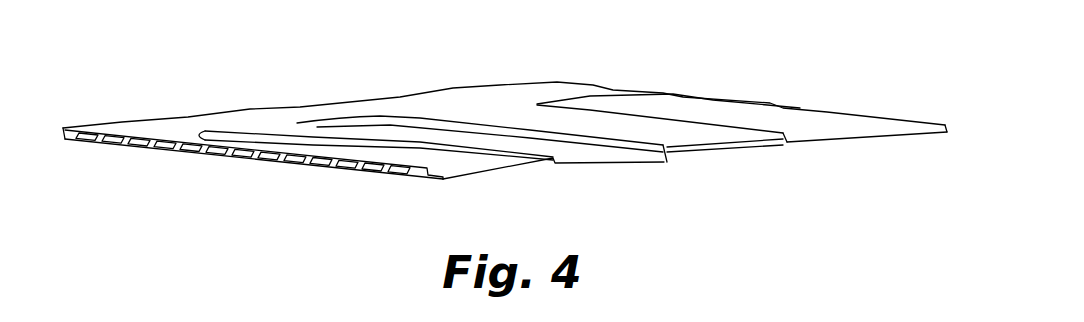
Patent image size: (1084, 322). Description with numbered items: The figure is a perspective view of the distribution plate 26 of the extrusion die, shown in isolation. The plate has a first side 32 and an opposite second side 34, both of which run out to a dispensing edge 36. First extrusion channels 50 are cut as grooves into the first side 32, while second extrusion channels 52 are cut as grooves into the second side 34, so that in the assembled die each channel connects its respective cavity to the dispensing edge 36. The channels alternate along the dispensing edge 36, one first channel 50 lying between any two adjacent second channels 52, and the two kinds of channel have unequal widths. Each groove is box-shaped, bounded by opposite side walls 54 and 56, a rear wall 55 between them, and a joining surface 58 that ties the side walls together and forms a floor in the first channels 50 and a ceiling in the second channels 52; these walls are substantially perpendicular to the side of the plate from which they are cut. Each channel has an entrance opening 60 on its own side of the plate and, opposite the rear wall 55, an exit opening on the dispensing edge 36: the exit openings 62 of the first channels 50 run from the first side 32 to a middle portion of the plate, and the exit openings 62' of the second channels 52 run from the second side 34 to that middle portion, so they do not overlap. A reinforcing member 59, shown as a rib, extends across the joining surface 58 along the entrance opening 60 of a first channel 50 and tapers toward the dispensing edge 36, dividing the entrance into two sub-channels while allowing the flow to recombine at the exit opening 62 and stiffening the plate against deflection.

The distribution plate 26 is at (800, 68).
The first side 32 is at (512, 103).
The second side 34 is at (200, 158).
The dispensing edge 36 is at (842, 140).
The first extrusion channel 50 is at (397, 126).
The second extrusion channel 52 is at (367, 175).
The side wall 54 is at (253, 147).
The rear wall 55 is at (362, 120).
The side wall 56 is at (452, 122).
The joining surface 58 is at (291, 143).
The reinforcing member 59 is at (317, 125).
The entrance opening 60 is at (243, 137).
The exit opening 62 is at (513, 200).
The exit opening 62' is at (722, 202).